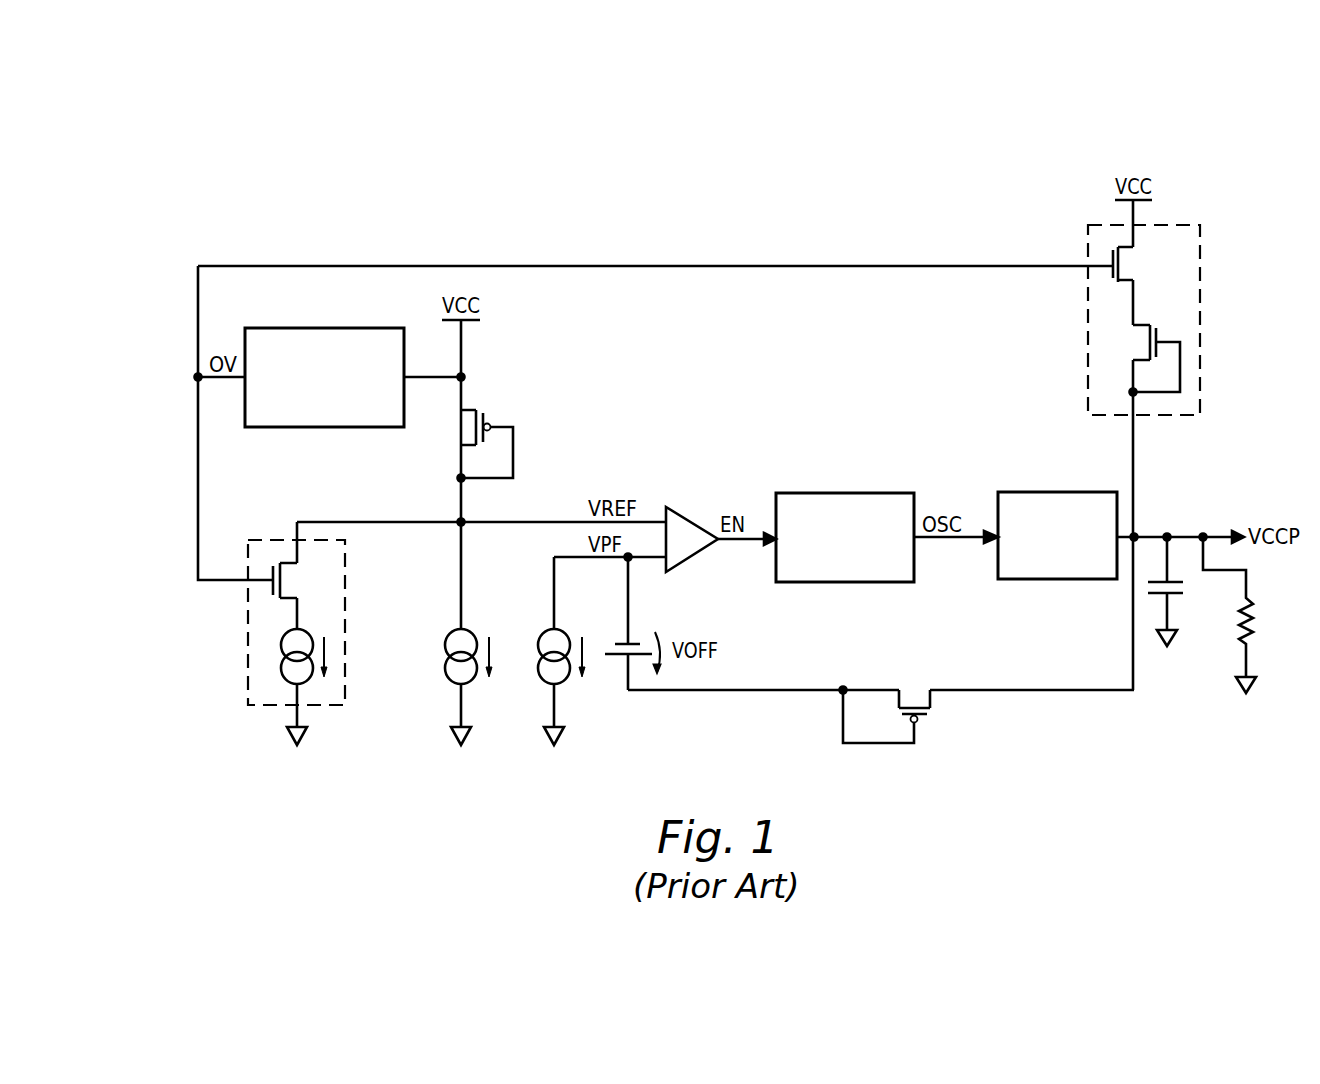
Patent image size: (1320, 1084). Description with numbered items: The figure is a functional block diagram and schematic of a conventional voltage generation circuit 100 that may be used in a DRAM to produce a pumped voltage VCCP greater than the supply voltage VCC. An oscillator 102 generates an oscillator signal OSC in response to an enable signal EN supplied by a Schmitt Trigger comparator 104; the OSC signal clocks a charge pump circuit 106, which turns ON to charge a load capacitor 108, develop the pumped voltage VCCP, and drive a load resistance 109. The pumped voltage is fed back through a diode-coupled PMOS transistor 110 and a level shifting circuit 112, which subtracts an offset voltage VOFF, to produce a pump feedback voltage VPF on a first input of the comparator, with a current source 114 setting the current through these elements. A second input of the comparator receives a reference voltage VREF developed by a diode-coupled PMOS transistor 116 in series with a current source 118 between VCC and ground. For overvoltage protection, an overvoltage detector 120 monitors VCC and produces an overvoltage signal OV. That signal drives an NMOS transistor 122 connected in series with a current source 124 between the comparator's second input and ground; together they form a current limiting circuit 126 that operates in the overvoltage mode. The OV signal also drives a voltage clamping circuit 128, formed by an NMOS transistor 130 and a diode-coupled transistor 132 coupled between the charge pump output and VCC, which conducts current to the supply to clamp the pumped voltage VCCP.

The voltage generation circuit 100 is at (912, 184).
The oscillator 102 is at (852, 493).
The Schmitt Trigger comparator 104 is at (684, 519).
The charge pump circuit 106 is at (1058, 579).
The load capacitor 108 is at (1175, 598).
The load resistance 109 is at (1252, 633).
The diode-coupled PMOS transistor 110 is at (934, 720).
The level shifting circuit 112 is at (610, 660).
The current source 114 is at (539, 648).
The diode-coupled PMOS transistor 116 is at (476, 410).
The current source 118 is at (446, 648).
The overvoltage detector 120 is at (312, 328).
The NMOS transistor 122 is at (282, 562).
The current source 124 is at (281, 665).
The current limiting circuit 126 is at (346, 592).
The voltage clamping circuit 128 is at (1180, 226).
The NMOS transistor 130 is at (1122, 276).
The diode-coupled transistor 132 is at (1145, 330).